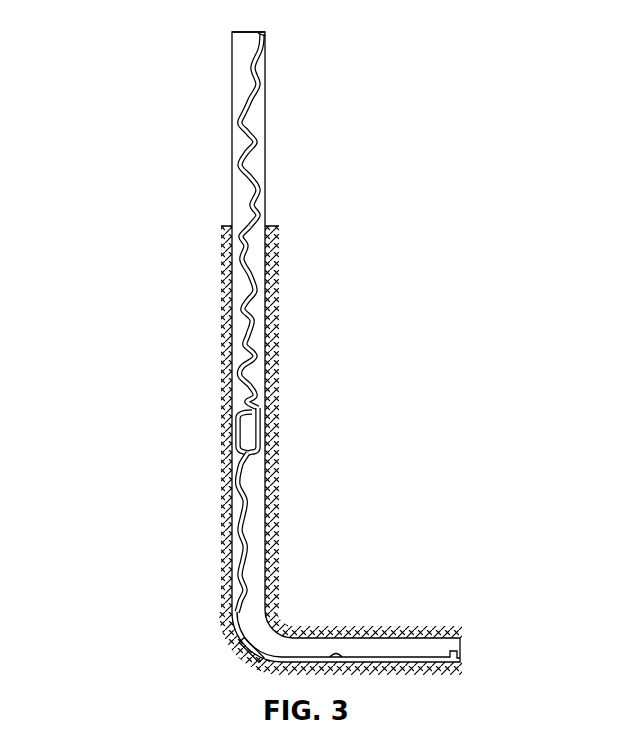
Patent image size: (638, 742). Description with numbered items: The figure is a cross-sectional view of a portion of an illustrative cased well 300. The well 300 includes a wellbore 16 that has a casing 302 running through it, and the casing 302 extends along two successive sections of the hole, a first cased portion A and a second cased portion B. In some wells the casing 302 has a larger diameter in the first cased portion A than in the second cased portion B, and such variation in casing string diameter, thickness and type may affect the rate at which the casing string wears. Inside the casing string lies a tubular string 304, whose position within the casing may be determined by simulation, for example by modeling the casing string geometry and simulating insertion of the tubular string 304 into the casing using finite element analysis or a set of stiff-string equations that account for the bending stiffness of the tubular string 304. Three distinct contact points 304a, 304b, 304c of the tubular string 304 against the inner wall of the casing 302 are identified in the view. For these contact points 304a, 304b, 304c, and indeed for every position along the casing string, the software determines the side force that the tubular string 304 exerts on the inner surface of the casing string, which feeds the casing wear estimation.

The cased well 300 is at (108, 132).
The wellbore 16 is at (232, 112).
The first cased portion A is at (222, 143).
The second cased portion B is at (218, 294).
The casing 302 is at (232, 185).
The tubular string 304 is at (258, 352).
The contact point 304a is at (258, 415).
The contact point 304b is at (245, 445).
The contact point 304c is at (250, 462).